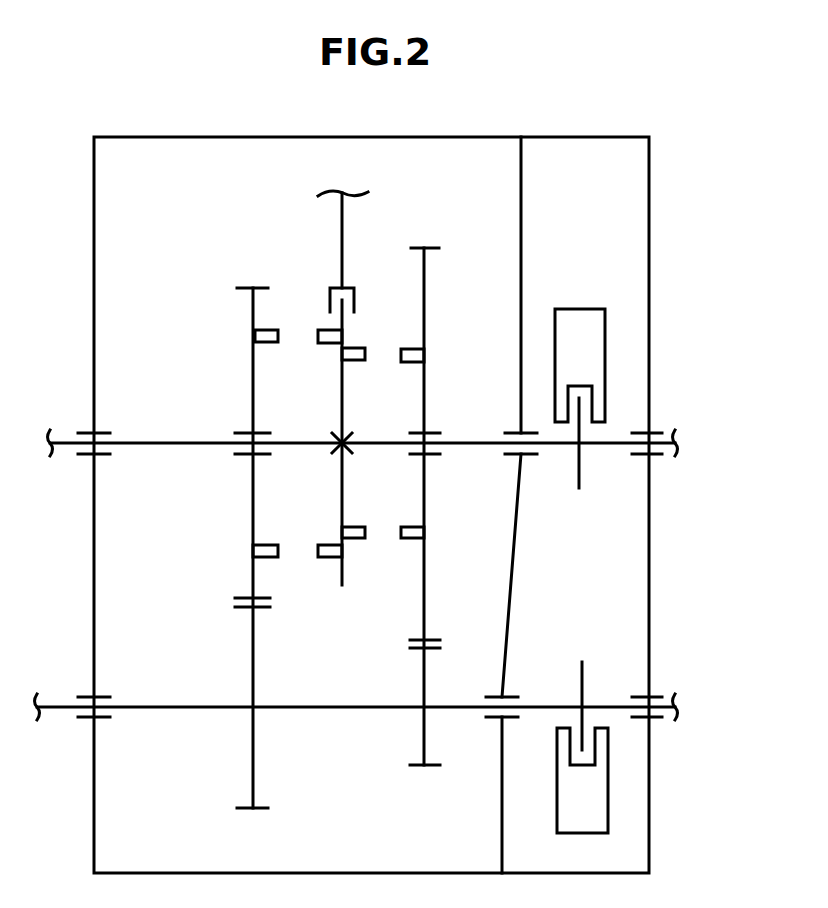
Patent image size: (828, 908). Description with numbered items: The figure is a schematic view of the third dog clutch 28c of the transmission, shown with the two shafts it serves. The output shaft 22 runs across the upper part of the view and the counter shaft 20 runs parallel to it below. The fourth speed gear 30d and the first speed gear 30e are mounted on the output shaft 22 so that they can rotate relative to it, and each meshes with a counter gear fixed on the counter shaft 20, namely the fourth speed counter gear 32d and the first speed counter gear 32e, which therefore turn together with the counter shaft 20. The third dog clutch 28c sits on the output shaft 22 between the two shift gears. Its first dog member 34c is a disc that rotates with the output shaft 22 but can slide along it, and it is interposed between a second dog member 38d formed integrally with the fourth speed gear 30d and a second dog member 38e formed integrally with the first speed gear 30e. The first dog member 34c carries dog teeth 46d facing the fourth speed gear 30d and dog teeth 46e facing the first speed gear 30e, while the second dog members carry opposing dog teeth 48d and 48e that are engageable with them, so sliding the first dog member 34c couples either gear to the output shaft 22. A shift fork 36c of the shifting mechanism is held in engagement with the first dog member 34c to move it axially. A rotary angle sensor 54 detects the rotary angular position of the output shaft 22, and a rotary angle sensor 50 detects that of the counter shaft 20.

The counter shaft 20 is at (161, 698).
The output shaft 22 is at (165, 440).
The third dog clutch 28c is at (308, 366).
The fourth speed gear 30d is at (250, 286).
The first speed gear 30e is at (433, 246).
The fourth speed counter gear 32d is at (250, 812).
The first speed counter gear 32e is at (418, 768).
The first dog member 34c is at (316, 304).
The shift fork 36c is at (345, 253).
The second dog member 38d is at (241, 332).
The second dog member 38e is at (432, 331).
The dog teeth 46d is at (328, 552).
The dog teeth 46e is at (352, 532).
The dog teeth 48d is at (268, 342).
The dog teeth 48e is at (413, 357).
The rotary angle sensor 50 is at (622, 782).
The rotary angle sensor 54 is at (620, 360).